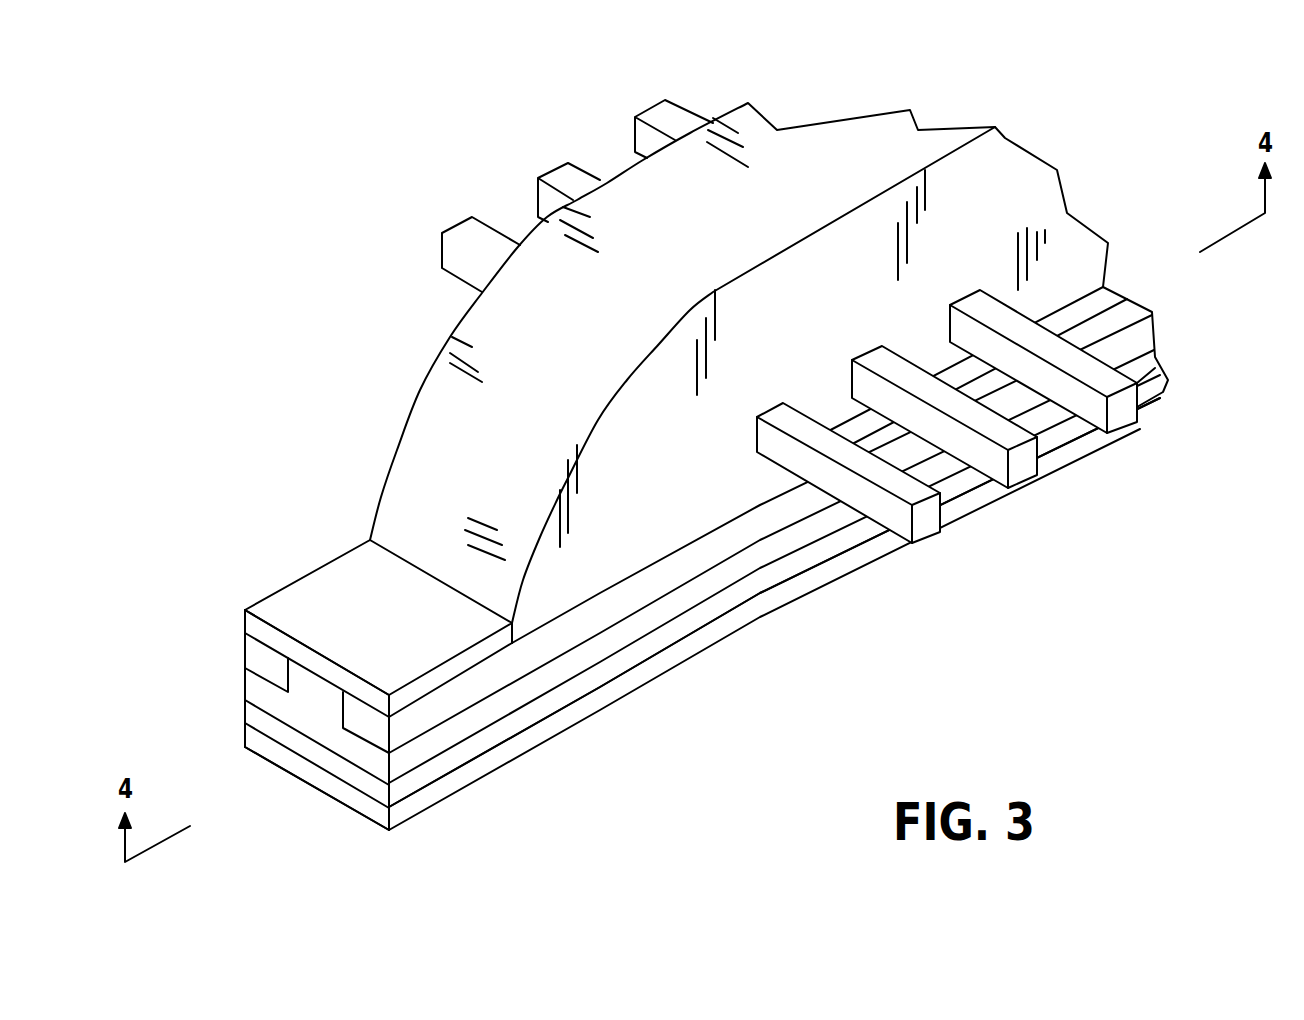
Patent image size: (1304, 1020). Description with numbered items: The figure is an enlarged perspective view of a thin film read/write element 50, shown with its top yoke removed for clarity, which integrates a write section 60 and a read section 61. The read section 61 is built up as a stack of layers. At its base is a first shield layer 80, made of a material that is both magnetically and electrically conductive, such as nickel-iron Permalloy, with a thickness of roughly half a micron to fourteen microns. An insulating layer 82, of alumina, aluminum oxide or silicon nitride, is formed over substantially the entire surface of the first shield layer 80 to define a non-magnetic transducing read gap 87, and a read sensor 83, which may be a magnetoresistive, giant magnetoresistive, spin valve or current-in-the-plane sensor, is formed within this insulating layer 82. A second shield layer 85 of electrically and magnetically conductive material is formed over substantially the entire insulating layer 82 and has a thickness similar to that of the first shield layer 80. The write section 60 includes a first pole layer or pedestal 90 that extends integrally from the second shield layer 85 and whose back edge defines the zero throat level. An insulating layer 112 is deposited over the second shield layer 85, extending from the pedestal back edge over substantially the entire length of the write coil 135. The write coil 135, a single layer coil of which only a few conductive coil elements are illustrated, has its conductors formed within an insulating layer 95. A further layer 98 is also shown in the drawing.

The read/write element 50 is at (463, 93).
The top layer 98 is at (258, 628).
The write section 60 is at (184, 637).
The first pole layer or pedestal P1 90 is at (305, 702).
The read section 61 is at (184, 724).
The read sensor 83 is at (328, 760).
The insulating layer 82 is at (463, 753).
The read gap 87 is at (632, 687).
The second shield layer 85 is at (492, 713).
The first shield layer 80 is at (635, 568).
The insulating layer 112 is at (662, 583).
The insulating layer 95 is at (872, 320).
The write coil 135 is at (1127, 418).